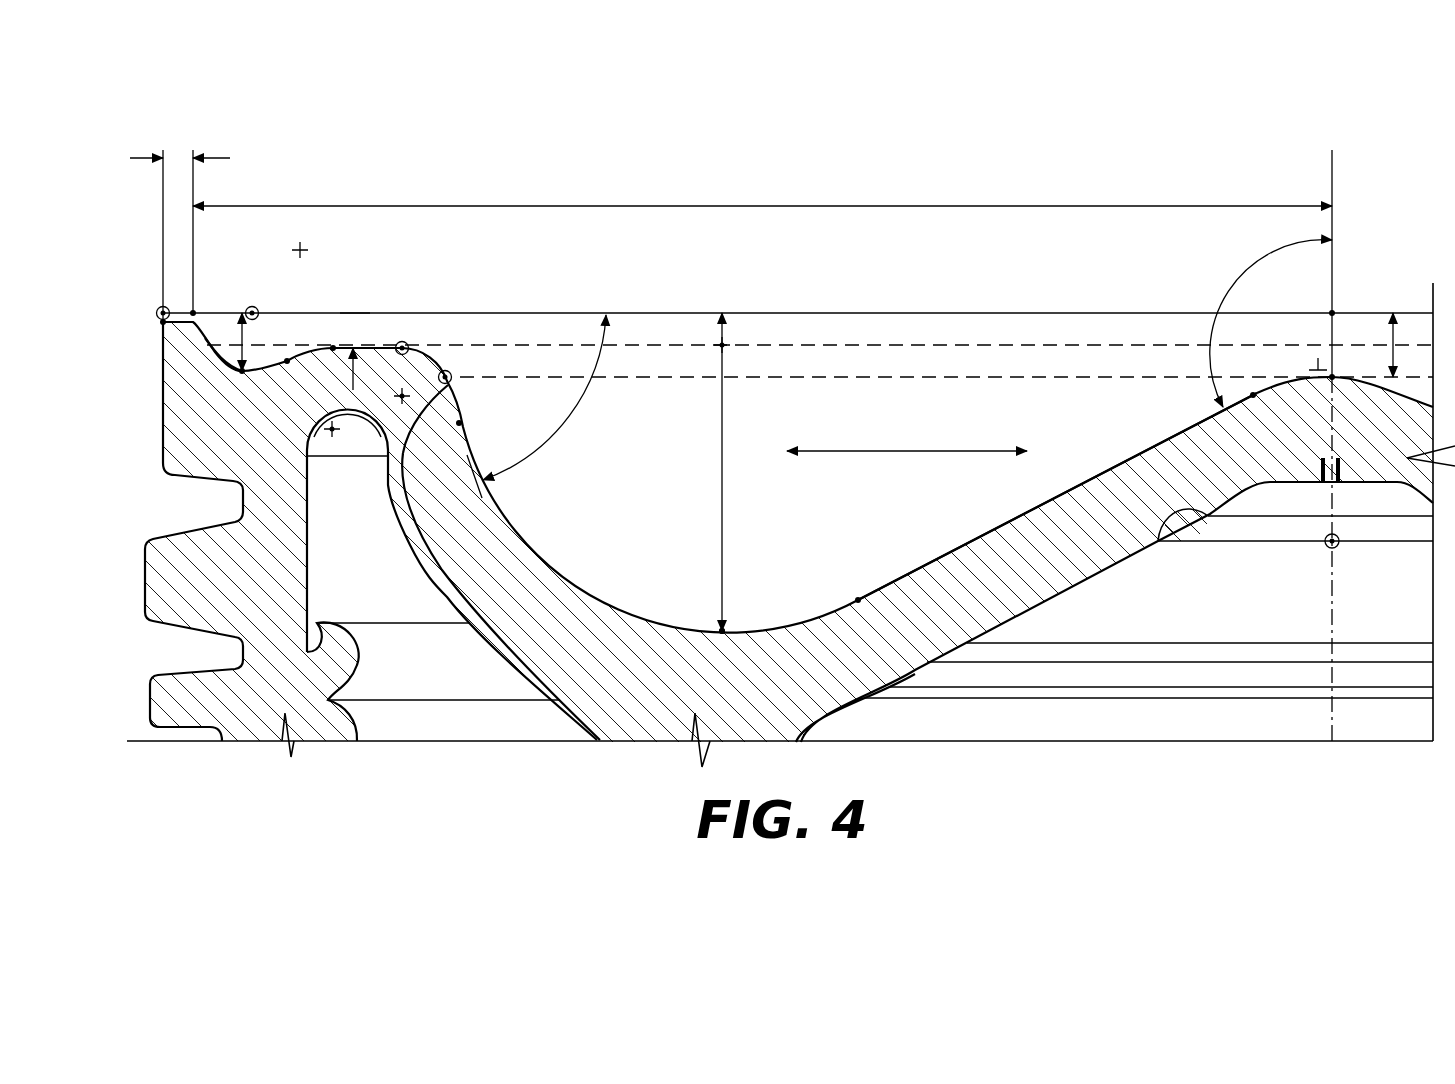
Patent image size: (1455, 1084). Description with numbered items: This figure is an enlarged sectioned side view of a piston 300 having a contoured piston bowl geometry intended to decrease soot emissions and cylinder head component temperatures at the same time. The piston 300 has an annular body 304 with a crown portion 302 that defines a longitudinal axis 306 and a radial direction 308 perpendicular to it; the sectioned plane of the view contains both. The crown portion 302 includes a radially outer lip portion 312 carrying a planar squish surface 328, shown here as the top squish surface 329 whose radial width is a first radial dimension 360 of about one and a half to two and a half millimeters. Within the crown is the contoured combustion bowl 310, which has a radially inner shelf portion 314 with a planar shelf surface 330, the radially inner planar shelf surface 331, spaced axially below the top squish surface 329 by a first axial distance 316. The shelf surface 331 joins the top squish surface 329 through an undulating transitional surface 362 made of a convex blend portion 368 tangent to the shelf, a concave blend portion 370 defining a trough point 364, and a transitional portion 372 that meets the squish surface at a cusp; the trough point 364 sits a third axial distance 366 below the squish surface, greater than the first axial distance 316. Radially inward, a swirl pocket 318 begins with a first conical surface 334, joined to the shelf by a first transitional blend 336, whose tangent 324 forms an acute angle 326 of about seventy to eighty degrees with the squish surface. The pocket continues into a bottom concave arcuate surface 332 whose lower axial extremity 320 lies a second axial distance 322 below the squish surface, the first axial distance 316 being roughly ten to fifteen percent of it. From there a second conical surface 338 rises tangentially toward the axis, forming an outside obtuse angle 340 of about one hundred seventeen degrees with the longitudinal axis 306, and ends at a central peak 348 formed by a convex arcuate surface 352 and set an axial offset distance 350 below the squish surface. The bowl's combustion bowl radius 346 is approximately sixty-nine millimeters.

The piston 300 is at (880, 136).
The crown portion 302 is at (158, 345).
The annular body 304 is at (143, 590).
The longitudinal axis 306 is at (1334, 160).
The radial direction 308 is at (858, 453).
The contoured combustion bowl 310 is at (840, 420).
The radially outer lip portion 312 is at (197, 315).
The radially inner shelf portion 314 is at (385, 338).
The first axial distance 316 is at (355, 306).
The swirl pocket 318 is at (618, 545).
The lower axial extremity 320 is at (728, 636).
The second axial distance 322 is at (724, 334).
The tangent 324 is at (442, 420).
The acute angle 326 is at (578, 418).
The planar squish surface 328 is at (188, 310).
The top squish surface 329 is at (157, 310).
The planar shelf surface 330 is at (405, 341).
The radially inner planar shelf surface 331 is at (333, 345).
The bottom concave arcuate surface 332 is at (712, 636).
The first conical surface 334 is at (405, 462).
The first transitional blend 336 is at (450, 370).
The second conical surface 338 is at (1033, 507).
The outside obtuse angle 340 is at (1248, 284).
The combustion bowl radius 346 is at (670, 206).
The peak 348 is at (1322, 382).
The axial offset distance 350 is at (1398, 320).
The convex arcuate surface 352 is at (1253, 397).
The first radial dimension 360 is at (135, 157).
The undulating transitional surface 362 is at (220, 368).
The trough point 364 is at (245, 376).
The third axial distance 366 is at (242, 320).
The convex blend portion 368 is at (258, 310).
The concave blend portion 370 is at (276, 378).
The transitional portion 372 is at (163, 325).